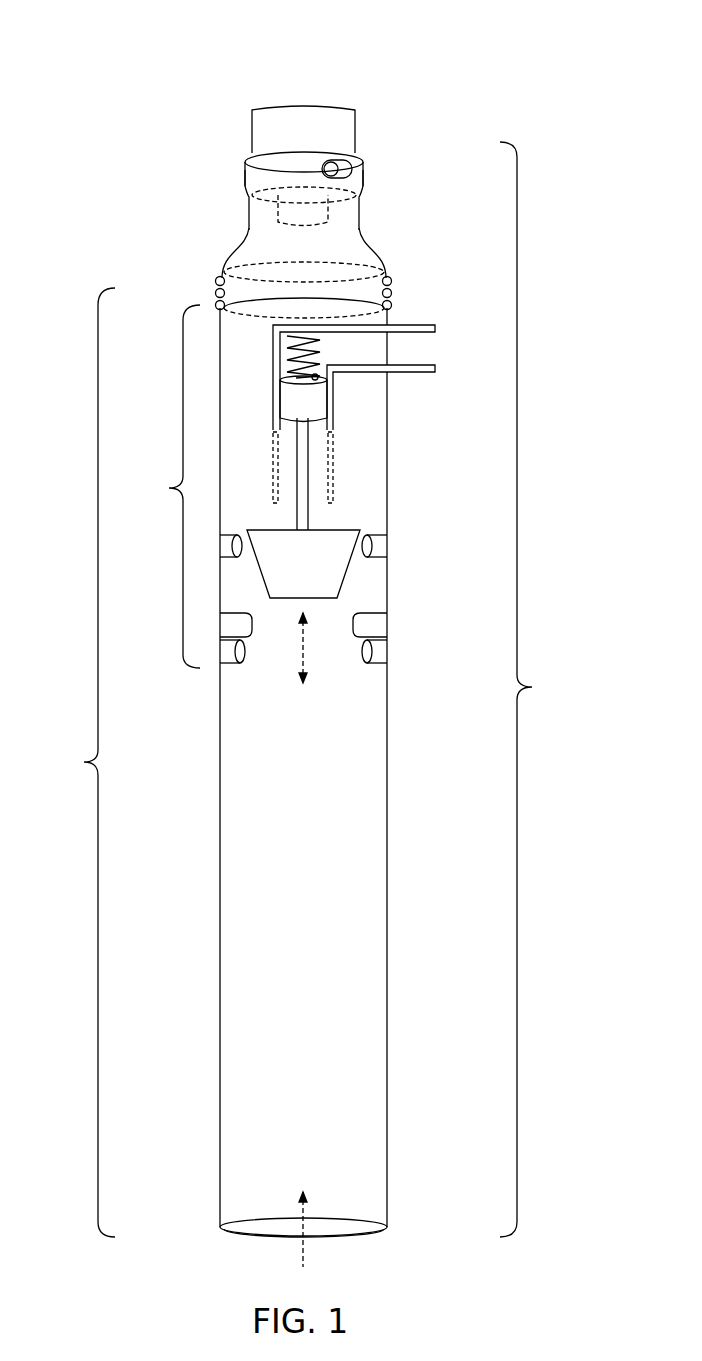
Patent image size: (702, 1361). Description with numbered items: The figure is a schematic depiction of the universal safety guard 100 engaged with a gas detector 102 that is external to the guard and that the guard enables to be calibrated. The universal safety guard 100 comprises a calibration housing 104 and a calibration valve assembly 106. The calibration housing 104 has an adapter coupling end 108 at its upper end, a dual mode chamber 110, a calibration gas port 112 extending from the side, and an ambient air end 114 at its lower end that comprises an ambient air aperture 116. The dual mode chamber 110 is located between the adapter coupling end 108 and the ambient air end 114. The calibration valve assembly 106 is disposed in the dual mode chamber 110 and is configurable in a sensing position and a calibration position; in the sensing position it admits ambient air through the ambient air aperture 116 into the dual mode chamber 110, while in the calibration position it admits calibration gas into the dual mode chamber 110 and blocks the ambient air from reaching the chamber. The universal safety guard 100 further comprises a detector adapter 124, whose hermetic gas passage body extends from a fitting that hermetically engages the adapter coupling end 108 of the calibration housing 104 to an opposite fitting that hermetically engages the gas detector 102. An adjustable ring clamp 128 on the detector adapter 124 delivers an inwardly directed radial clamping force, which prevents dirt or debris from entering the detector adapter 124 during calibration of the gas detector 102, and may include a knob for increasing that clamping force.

The universal safety guard 100 is at (539, 689).
The gas detector 102 is at (328, 104).
The calibration housing 104 is at (211, 762).
The calibration valve assembly 106 is at (348, 508).
The adapter coupling end 108 is at (238, 310).
The dual mode chamber 110 is at (258, 494).
The calibration gas port 112 is at (427, 345).
The ambient air end 114 is at (353, 1228).
The ambient air aperture 116 is at (300, 1228).
The detector adapter 124 is at (264, 214).
The adjustable ring clamp 128 is at (272, 123).